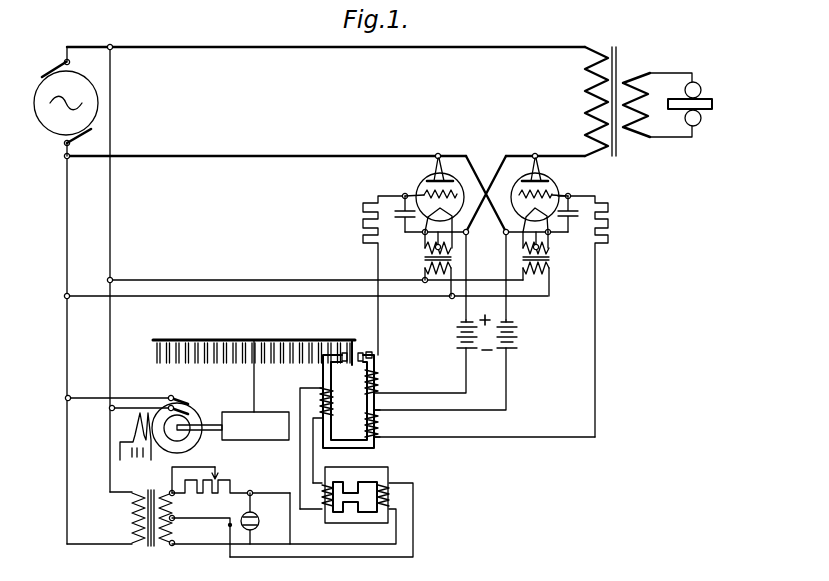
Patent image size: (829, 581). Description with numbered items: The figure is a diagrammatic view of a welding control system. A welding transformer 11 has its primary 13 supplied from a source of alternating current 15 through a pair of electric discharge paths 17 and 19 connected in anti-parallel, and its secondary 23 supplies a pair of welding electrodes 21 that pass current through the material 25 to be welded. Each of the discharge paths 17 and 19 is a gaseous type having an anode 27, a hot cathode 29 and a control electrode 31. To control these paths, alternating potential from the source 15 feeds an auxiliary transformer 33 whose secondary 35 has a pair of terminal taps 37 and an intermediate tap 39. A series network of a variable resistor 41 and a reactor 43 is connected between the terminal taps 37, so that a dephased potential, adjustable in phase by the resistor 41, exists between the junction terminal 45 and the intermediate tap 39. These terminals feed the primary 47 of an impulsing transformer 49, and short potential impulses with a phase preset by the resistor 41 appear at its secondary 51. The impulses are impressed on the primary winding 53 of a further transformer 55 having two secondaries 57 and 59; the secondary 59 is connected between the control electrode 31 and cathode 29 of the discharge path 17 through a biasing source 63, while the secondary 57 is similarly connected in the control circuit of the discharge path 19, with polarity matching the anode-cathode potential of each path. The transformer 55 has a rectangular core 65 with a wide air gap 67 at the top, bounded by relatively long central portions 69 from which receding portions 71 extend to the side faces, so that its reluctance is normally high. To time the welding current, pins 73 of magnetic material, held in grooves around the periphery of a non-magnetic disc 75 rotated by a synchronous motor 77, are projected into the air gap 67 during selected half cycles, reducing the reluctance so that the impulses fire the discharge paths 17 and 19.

The welding transformer 11 is at (622, 32).
The primary 13 is at (588, 47).
The source of alternating current 15 is at (96, 68).
The electric discharge path 17 is at (413, 181).
The electric discharge path 19 is at (519, 181).
The welding electrodes 21 is at (700, 91).
The secondary 23 is at (632, 78).
The material to be welded 25 is at (714, 105).
The anode 27 is at (442, 172).
The hot cathode 29 is at (428, 214).
The control electrode 31 is at (424, 196).
The auxiliary transformer 33 is at (157, 562).
The secondary 35 is at (168, 546).
The terminal taps 37 is at (175, 494).
The intermediate tap 39 is at (175, 519).
The variable resistor 41 is at (219, 487).
The reactor 43 is at (259, 520).
The junction terminal 45 is at (251, 491).
The primary 47 is at (396, 484).
The impulsing transformer 49 is at (364, 542).
The secondary 51 is at (336, 485).
The primary winding 53 is at (322, 393).
The transformer 55 is at (361, 408).
The secondary 57 is at (375, 382).
The secondary 59 is at (376, 432).
The biasing source 63 is at (460, 338).
The rectangular core 65 is at (380, 404).
The air gap 67 is at (350, 378).
The central portions 69 is at (352, 355).
The receding portions 71 is at (373, 361).
The pins 73 is at (350, 342).
The non-magnetic disc 75 is at (224, 331).
The synchronous motor 77 is at (208, 394).